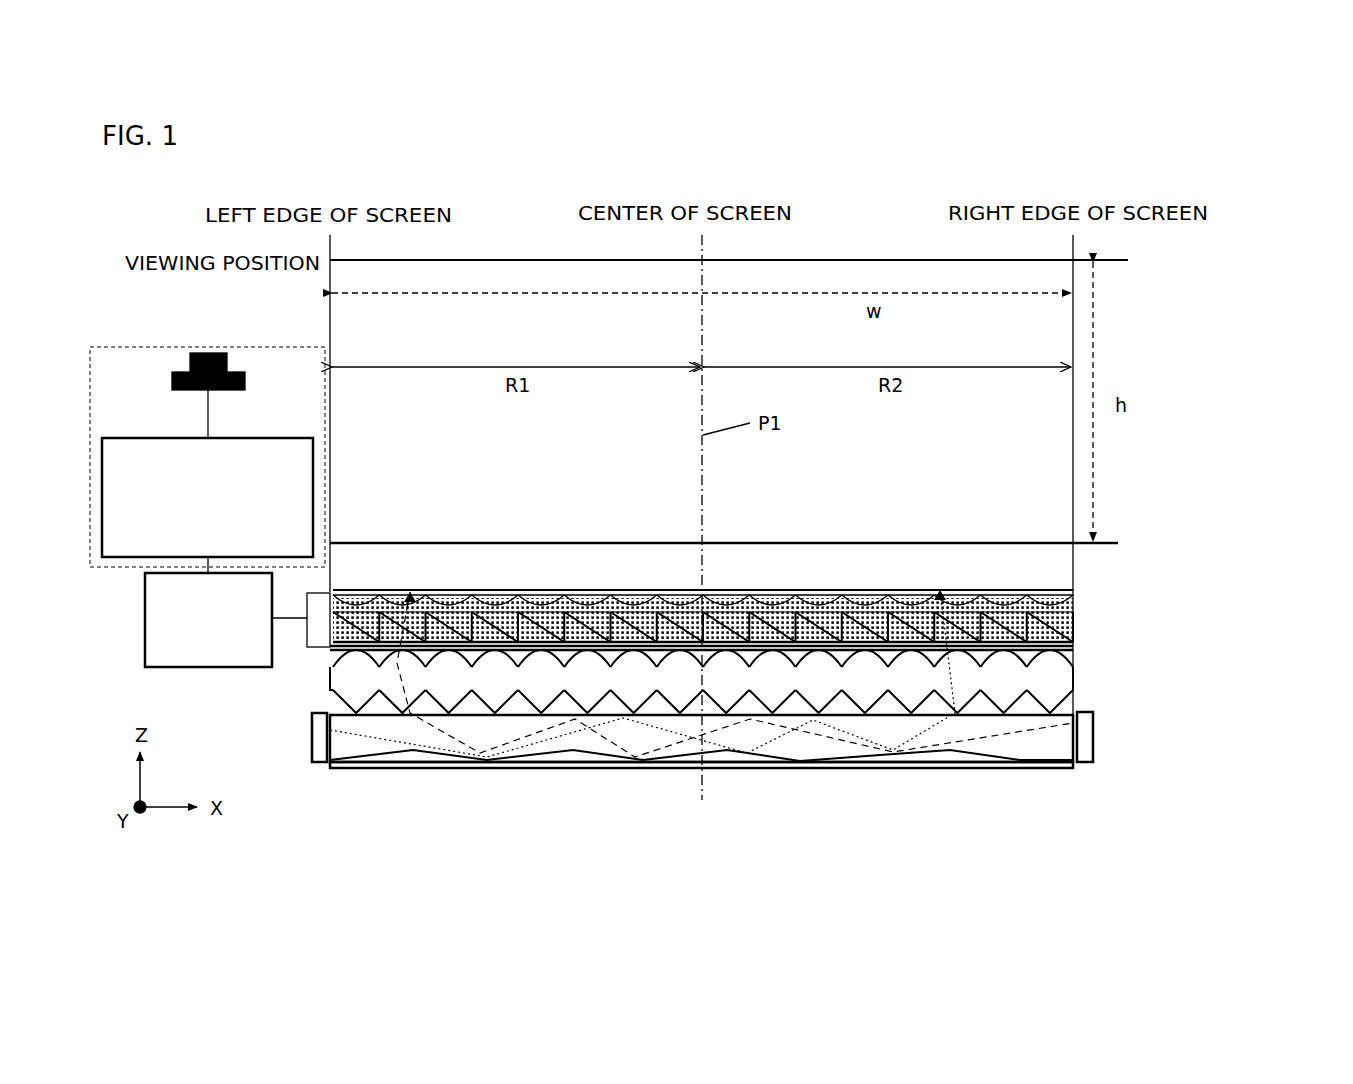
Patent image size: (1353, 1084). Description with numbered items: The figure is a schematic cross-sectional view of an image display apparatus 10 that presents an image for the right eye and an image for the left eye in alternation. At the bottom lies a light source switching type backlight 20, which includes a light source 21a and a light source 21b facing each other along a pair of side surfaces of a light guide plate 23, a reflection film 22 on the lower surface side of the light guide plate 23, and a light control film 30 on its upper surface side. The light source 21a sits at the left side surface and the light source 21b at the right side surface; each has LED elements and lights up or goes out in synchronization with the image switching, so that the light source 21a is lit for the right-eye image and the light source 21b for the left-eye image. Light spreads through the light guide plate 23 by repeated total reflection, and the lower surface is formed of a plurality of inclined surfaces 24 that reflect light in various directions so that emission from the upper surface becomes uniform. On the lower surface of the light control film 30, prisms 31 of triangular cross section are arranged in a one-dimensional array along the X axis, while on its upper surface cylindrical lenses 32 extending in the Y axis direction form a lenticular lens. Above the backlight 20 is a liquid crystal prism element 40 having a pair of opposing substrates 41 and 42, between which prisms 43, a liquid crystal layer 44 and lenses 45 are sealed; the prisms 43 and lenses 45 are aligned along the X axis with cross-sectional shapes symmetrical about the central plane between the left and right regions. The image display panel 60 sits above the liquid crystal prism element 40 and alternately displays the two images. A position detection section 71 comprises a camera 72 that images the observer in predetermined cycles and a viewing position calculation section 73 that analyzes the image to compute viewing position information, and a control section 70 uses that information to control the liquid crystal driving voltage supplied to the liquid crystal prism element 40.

The image display apparatus 10 is at (1208, 290).
The light source switching type backlight 20 is at (780, 702).
The light source 21a is at (310, 762).
The light source 21b is at (1087, 737).
The reflection film 22 is at (927, 768).
The light guide plate 23 is at (820, 742).
The inclined surfaces 24 is at (397, 764).
The light control film 30 is at (778, 687).
The prisms 31 is at (1067, 700).
The cylindrical lenses 32 is at (1077, 663).
The liquid crystal prism element 40 is at (794, 609).
The opposing substrate 41 is at (1073, 647).
The opposing substrate 42 is at (1073, 593).
The prisms 43 is at (1073, 631).
The liquid crystal layer 44 is at (1073, 612).
The lenses 45 is at (1073, 600).
The image display panel 60 is at (962, 542).
The control section 70 is at (208, 620).
The position detection section 71 is at (168, 347).
The camera 72 is at (218, 353).
The viewing position calculation section 73 is at (207, 497).